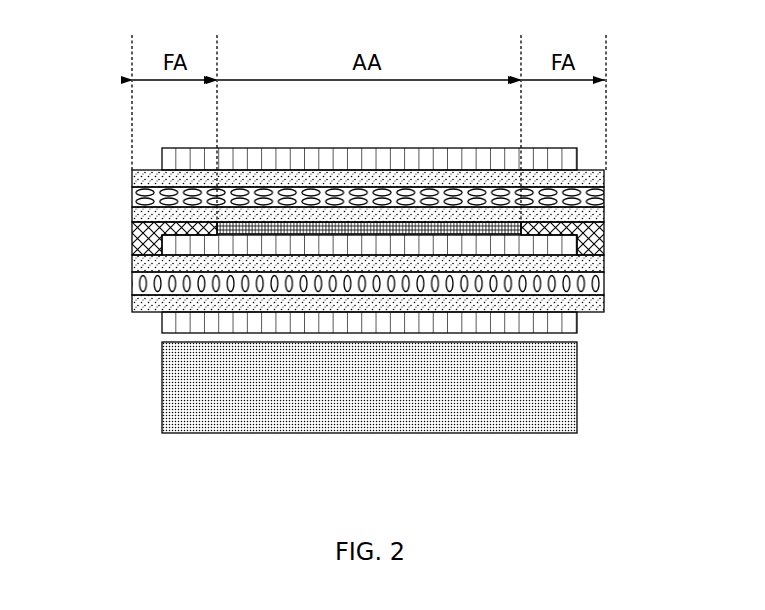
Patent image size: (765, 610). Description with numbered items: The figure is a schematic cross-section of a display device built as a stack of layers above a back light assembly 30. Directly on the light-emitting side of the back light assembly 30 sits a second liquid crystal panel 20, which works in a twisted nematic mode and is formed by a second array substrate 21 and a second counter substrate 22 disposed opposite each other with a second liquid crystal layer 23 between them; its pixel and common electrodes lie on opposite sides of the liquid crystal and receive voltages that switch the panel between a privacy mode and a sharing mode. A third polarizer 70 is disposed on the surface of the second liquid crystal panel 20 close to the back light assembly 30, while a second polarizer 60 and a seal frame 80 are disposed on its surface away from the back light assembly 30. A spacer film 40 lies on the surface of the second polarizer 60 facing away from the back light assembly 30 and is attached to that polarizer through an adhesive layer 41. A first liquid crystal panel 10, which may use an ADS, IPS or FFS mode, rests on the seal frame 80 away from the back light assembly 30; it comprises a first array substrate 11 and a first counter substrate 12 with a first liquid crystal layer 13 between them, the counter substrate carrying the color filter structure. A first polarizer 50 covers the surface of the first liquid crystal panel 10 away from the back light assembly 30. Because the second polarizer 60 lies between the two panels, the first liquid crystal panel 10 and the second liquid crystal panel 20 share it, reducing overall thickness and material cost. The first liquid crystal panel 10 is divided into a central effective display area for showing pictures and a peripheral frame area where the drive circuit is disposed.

The first liquid crystal panel 10 is at (370, 183).
The first array substrate 11 is at (597, 213).
The first counter substrate 12 is at (597, 178).
The first liquid crystal layer 13 is at (597, 193).
The second liquid crystal panel 20 is at (372, 294).
The second array substrate 21 is at (597, 302).
The second counter substrate 22 is at (597, 265).
The second liquid crystal layer 23 is at (597, 283).
The back light assembly 30 is at (183, 388).
The spacer film 40 is at (305, 226).
The adhesive layer 41 is at (421, 230).
The first polarizer 50 is at (172, 161).
The second polarizer 60 is at (172, 248).
The third polarizer 70 is at (172, 323).
The seal frame 80 is at (597, 241).